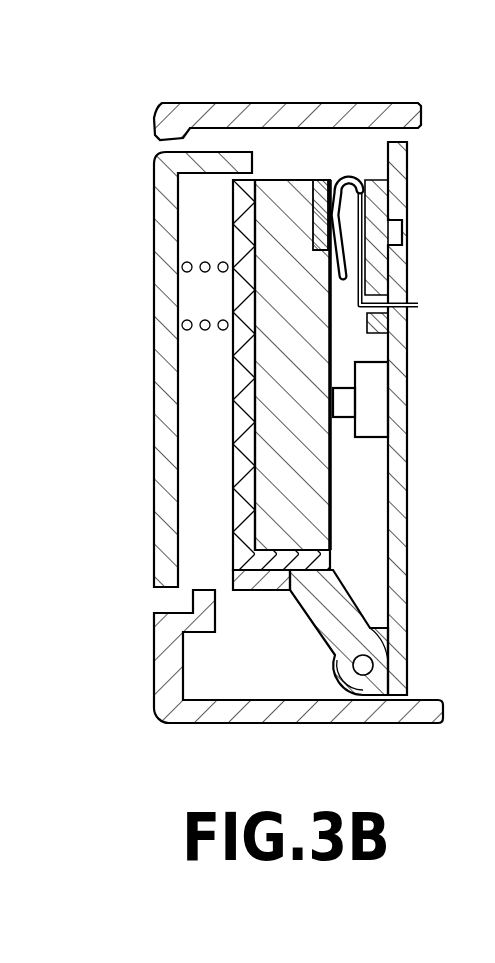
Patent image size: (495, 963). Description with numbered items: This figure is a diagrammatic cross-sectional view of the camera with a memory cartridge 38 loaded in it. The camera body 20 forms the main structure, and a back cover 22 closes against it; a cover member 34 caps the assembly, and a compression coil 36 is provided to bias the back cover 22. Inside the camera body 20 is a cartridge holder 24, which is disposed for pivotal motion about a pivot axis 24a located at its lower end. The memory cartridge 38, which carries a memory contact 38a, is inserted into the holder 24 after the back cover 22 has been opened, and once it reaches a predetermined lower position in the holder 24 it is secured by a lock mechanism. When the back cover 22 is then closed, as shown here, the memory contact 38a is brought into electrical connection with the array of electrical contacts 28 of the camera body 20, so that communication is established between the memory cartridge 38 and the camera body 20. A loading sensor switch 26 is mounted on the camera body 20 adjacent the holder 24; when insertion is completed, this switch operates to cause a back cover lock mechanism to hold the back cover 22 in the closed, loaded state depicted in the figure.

The camera body 20 is at (286, 96).
The back cover 22 is at (160, 208).
The cartridge holder 24 is at (240, 378).
The pivot axis 24a is at (408, 643).
The loading sensor switch 26 is at (345, 400).
The array of electrical contacts 28 is at (348, 176).
The cover member 34 is at (221, 112).
The compression coil 36 is at (206, 316).
The memory cartridge 38 is at (267, 470).
The memory contact 38a is at (330, 182).